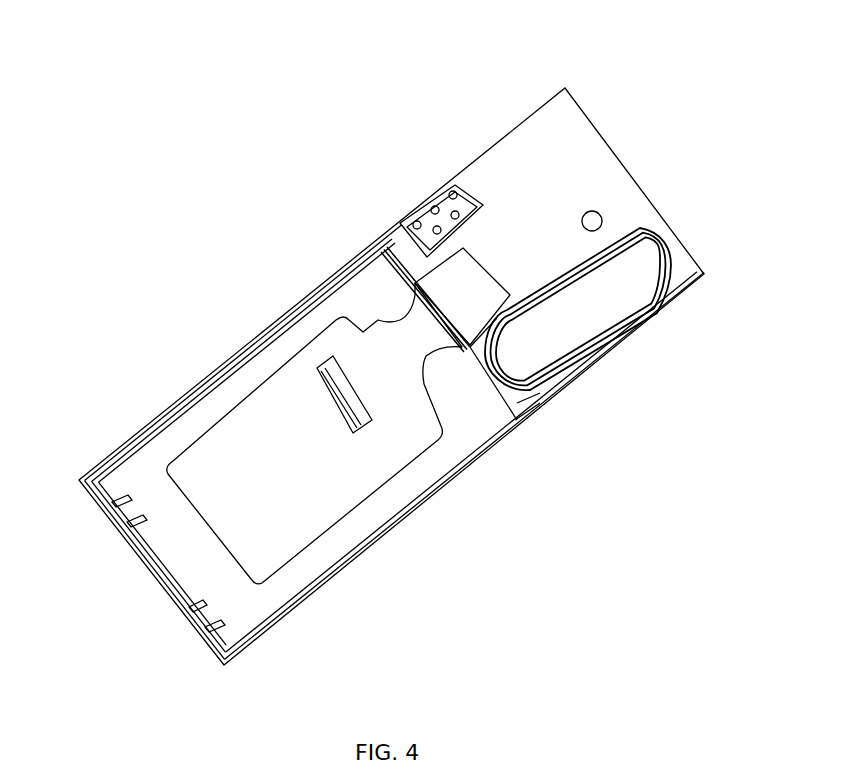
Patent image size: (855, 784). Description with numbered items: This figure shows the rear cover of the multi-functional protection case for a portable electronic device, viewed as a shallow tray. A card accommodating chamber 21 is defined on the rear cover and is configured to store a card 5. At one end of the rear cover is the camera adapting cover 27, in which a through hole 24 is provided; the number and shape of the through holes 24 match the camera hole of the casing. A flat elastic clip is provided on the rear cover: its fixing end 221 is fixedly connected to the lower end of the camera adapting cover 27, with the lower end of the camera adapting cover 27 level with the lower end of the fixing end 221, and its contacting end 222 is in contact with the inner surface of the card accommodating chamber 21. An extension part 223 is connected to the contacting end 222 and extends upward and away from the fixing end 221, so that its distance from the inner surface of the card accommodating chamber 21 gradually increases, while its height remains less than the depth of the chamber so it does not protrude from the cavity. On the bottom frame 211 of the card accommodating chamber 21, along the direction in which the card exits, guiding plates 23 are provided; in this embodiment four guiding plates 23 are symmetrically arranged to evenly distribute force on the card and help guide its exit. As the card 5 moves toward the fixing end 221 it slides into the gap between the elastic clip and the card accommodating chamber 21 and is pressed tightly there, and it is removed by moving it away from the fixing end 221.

The card 5 is at (246, 464).
The card accommodating chamber 21 is at (357, 517).
The guiding plate 23 is at (218, 622).
The through hole 24 is at (628, 248).
The camera adapting cover 27 is at (573, 150).
The bottom frame 211 is at (160, 566).
The fixing end 221 is at (463, 293).
The contacting end 222 is at (337, 367).
The extension part 223 is at (338, 398).